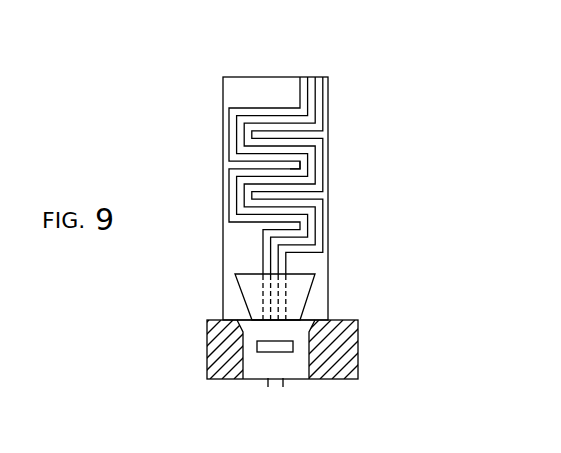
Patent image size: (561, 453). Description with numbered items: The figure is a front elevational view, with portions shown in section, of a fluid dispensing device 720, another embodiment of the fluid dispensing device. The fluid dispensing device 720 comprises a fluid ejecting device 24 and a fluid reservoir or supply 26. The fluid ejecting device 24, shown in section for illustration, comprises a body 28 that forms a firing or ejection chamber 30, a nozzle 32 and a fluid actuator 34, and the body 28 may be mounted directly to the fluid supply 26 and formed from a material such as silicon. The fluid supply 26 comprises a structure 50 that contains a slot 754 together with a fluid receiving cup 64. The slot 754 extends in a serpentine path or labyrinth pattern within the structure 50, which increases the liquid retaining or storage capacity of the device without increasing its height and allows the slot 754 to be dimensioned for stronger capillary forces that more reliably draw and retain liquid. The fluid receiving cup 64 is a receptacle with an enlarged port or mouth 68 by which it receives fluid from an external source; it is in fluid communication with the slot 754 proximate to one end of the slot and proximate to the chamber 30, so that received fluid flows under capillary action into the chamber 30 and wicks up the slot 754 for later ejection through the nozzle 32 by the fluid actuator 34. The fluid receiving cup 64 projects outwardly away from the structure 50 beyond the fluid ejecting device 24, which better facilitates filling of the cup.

The fluid ejecting device 24 is at (279, 347).
The fluid reservoir or supply 26 is at (345, 88).
The body 28 is at (205, 345).
The firing or ejection chamber 30 is at (303, 352).
The nozzle 32 is at (277, 382).
The fluid actuator 34 is at (300, 354).
The structure 50 is at (329, 140).
The fluid receiving cup 64 is at (236, 268).
The port or mouth 68 is at (318, 272).
The fluid dispensing device 720 is at (274, 177).
The slot 754 is at (301, 169).